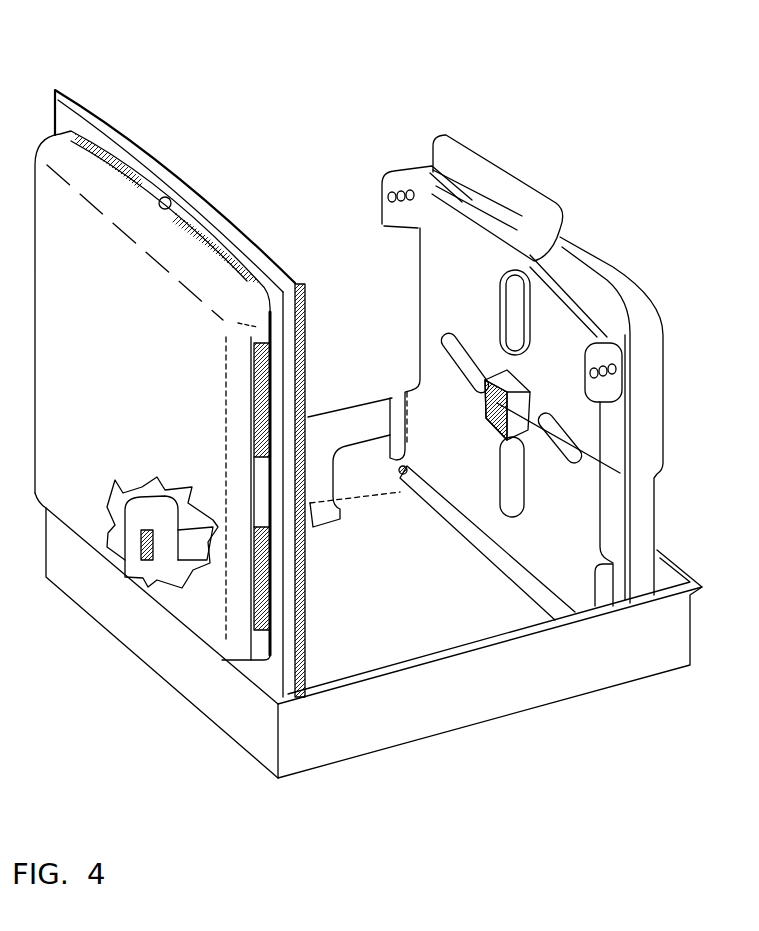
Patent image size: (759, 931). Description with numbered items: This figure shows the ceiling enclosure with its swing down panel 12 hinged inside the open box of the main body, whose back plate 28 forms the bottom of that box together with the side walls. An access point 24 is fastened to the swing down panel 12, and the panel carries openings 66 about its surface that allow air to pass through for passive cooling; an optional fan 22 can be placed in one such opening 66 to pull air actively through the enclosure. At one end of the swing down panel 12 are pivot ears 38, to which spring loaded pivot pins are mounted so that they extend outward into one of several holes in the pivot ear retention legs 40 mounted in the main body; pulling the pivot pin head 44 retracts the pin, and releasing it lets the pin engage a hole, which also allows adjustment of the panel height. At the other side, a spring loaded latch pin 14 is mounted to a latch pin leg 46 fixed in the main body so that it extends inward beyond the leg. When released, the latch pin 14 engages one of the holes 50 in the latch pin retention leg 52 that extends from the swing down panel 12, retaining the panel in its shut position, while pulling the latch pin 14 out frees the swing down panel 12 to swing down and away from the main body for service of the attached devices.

The swing down panel 12 is at (557, 335).
The spring loaded latch pin 14 is at (146, 534).
The fan 22 is at (620, 473).
The access point 24 is at (656, 337).
The back plate 28 is at (393, 637).
The pivot ear 38 is at (400, 413).
The pivot ear retention leg 40 is at (365, 470).
The pivot pin head 44 is at (403, 470).
The latch pin leg 46 is at (133, 520).
The hole 50 is at (384, 180).
The latch pin retention leg 52 is at (410, 170).
The opening 66 is at (520, 275).